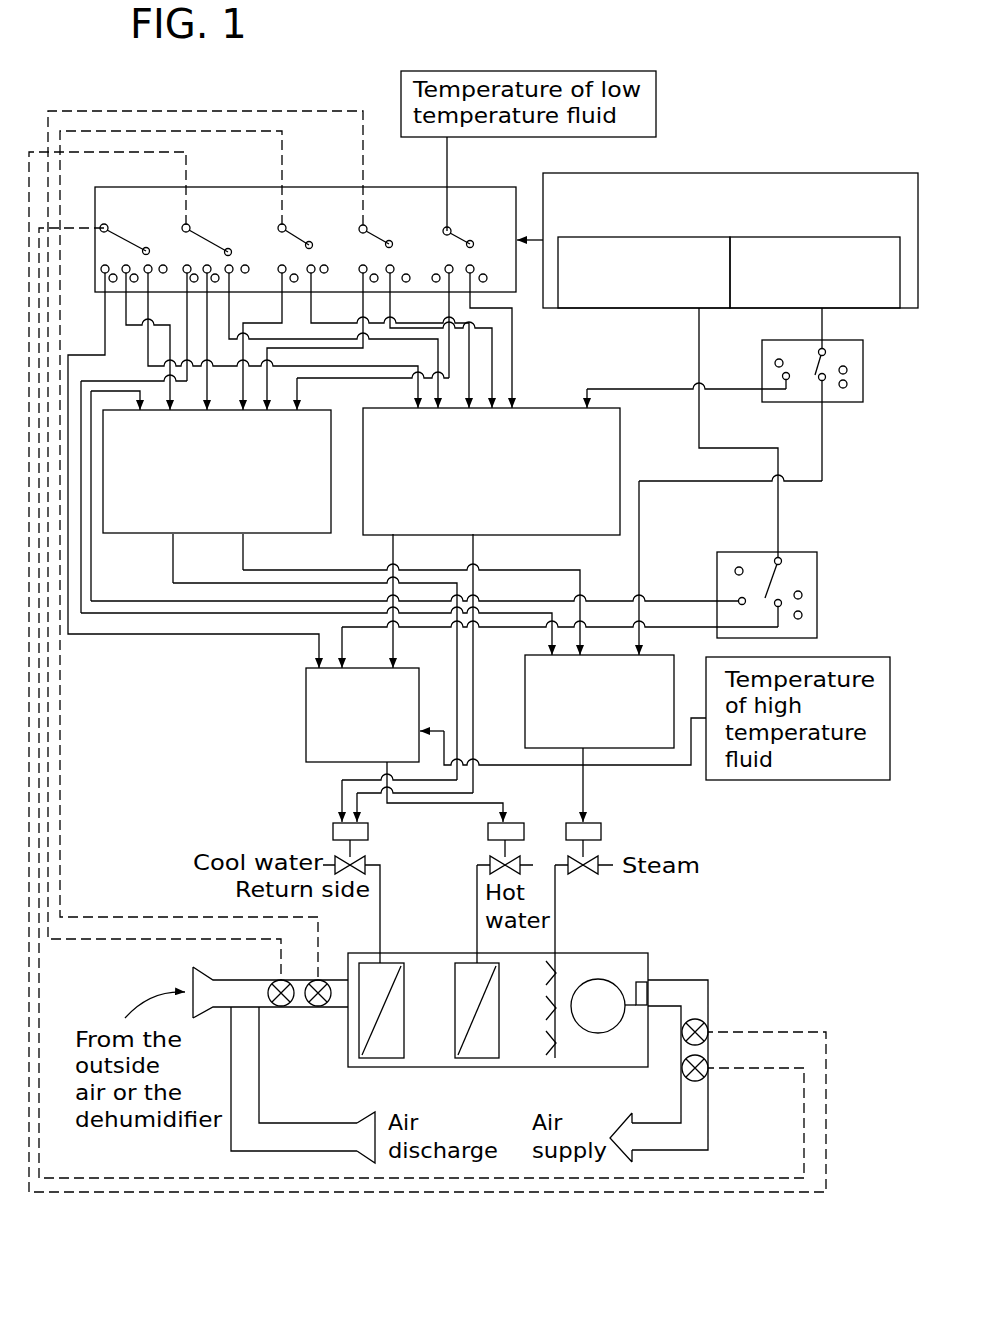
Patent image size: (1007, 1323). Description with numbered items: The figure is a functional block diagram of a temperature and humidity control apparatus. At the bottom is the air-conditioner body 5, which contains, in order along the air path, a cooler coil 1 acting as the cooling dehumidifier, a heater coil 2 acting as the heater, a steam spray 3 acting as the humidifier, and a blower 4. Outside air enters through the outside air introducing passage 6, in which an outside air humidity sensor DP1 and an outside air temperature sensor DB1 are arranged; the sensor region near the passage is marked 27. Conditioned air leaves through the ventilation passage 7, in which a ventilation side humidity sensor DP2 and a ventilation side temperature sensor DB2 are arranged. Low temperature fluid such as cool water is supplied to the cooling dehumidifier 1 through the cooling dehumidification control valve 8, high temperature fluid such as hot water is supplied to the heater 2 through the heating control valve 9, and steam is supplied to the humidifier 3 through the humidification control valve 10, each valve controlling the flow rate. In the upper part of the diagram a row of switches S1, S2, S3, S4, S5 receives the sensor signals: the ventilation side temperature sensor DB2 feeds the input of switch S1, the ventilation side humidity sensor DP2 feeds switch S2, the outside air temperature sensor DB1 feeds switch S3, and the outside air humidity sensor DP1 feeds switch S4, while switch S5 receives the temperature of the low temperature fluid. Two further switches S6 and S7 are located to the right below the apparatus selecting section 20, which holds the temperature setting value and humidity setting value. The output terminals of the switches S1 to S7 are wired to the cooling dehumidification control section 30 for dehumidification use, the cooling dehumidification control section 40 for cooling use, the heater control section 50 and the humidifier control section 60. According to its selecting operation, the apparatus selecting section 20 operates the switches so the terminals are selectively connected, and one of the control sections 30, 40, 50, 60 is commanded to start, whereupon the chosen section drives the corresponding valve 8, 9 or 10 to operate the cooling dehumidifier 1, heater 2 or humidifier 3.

The cooler coil 1 is at (380, 1062).
The heater coil 2 is at (479, 1062).
The steam spray 3 is at (558, 1060).
The blower 4 is at (600, 1033).
The air-conditioner body 5 is at (615, 1068).
The outside air introducing passage 6 is at (213, 979).
The ventilation passage 7 is at (680, 972).
The cooling dehumidification control valve 8 is at (368, 830).
The heating control valve 9 is at (516, 823).
The humidification control valve 10 is at (600, 823).
The apparatus selecting section 20 is at (755, 173).
The sensor 27 is at (265, 1013).
The cooling dehumidification control section for dehumidification use 30 is at (620, 443).
The cooling dehumidification control section for cooling use 40 is at (280, 535).
The heater control section 50 is at (422, 686).
The humidifier control section 60 is at (523, 677).
The switch S1 is at (122, 238).
The switch S2 is at (209, 238).
The switch S3 is at (297, 236).
The switch S4 is at (378, 238).
The switch S5 is at (460, 238).
The switch S6 is at (863, 372).
The switch S7 is at (800, 552).
The outside air humidity sensor DP1 is at (263, 980).
The outside air temperature sensor DB1 is at (318, 1006).
The ventilation side humidity sensor DP2 is at (744, 1012).
The ventilation side temperature sensor DB2 is at (744, 1091).